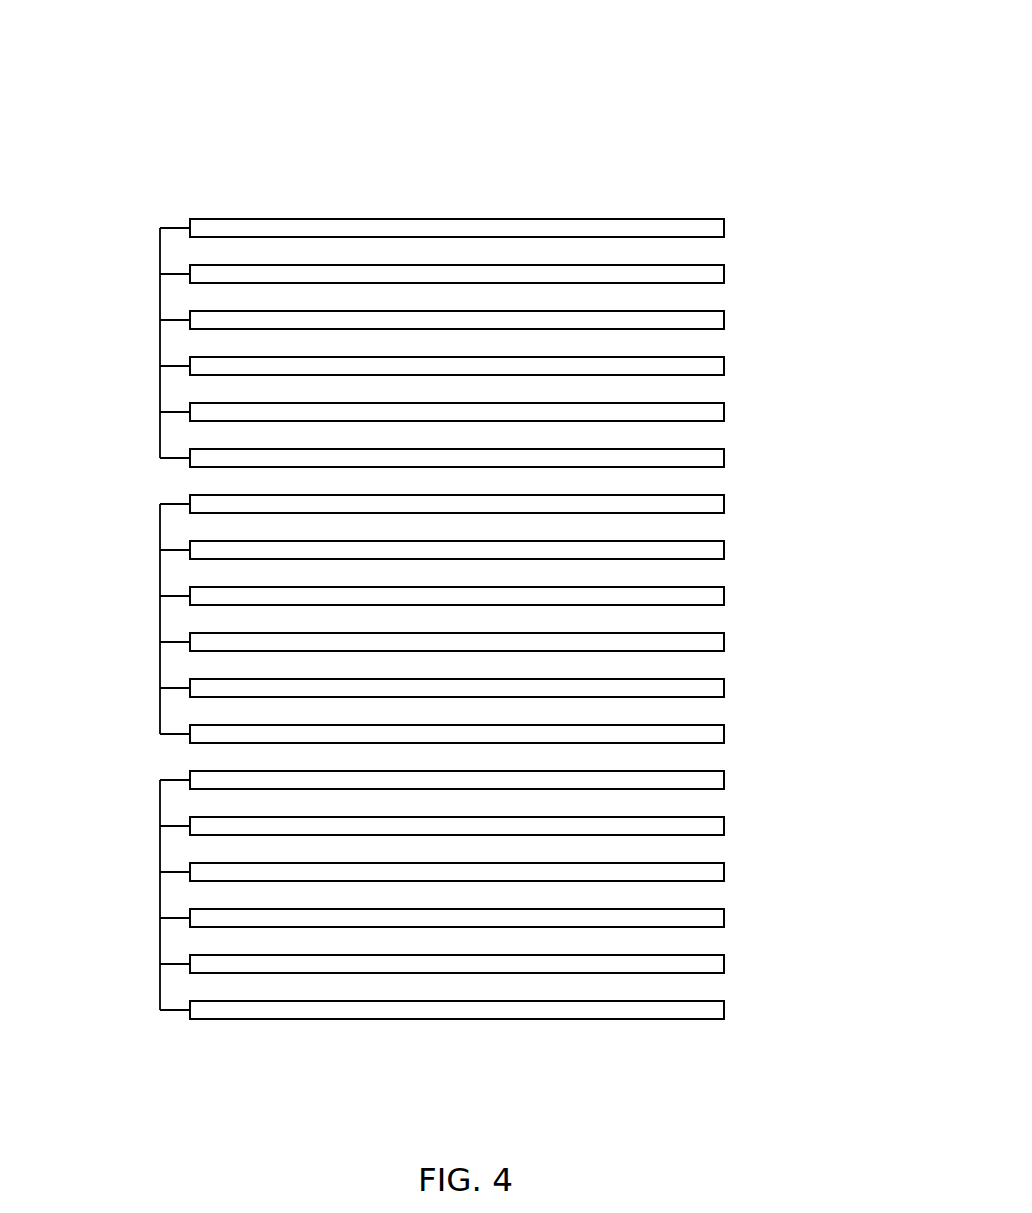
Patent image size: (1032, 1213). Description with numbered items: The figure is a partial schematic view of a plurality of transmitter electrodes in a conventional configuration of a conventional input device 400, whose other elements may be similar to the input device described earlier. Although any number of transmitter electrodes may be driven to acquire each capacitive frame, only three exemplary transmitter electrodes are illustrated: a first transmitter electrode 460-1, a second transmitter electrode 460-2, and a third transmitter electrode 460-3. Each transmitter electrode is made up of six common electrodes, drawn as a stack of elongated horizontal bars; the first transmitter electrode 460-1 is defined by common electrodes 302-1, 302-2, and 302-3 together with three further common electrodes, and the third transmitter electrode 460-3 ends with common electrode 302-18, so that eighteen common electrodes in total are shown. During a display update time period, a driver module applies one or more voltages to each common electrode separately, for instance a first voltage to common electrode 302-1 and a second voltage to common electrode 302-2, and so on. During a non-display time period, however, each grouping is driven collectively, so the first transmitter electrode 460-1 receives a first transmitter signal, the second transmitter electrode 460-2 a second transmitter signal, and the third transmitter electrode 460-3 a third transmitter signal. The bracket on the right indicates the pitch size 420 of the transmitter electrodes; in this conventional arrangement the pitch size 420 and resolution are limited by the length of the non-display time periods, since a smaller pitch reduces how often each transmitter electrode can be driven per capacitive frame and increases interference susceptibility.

The conventional input device 400 is at (606, 108).
The pitch size 420 is at (832, 473).
The common electrode 302-1 is at (724, 225).
The common electrode 302-2 is at (724, 271).
The common electrode 302-3 is at (724, 317).
The common electrode 302-18 is at (724, 1012).
The first transmitter electrode 460-1 is at (160, 343).
The second transmitter electrode 460-2 is at (160, 619).
The third transmitter electrode 460-3 is at (160, 895).